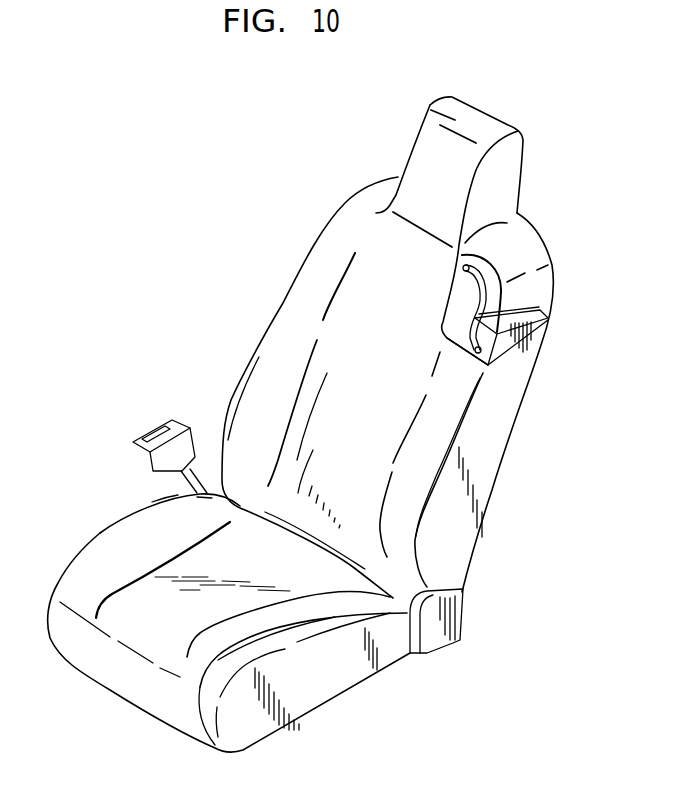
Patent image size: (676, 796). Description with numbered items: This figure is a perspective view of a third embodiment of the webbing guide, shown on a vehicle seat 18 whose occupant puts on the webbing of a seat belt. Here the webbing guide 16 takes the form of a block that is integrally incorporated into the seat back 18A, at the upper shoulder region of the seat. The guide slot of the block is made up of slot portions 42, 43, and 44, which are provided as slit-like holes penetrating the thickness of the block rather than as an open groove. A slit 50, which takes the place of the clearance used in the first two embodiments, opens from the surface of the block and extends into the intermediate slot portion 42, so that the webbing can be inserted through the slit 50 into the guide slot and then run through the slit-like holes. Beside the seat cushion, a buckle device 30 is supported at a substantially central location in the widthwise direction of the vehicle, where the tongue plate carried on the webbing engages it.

The seat 18 is at (235, 358).
The seat back 18A is at (303, 272).
The webbing guide 16 is at (538, 293).
The buckle device 30 is at (147, 430).
The intermediate slot portion 42 is at (476, 305).
The slot portion 43 is at (472, 282).
The slot portion 44 is at (476, 352).
The slit 50 is at (541, 322).